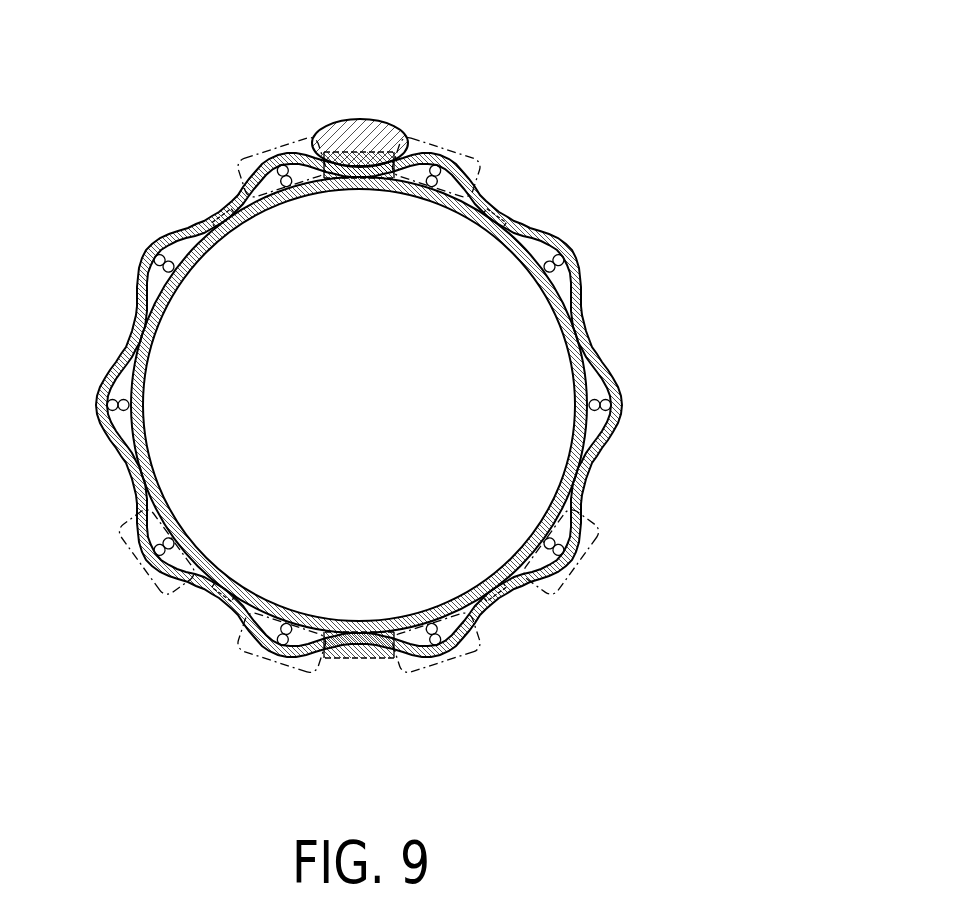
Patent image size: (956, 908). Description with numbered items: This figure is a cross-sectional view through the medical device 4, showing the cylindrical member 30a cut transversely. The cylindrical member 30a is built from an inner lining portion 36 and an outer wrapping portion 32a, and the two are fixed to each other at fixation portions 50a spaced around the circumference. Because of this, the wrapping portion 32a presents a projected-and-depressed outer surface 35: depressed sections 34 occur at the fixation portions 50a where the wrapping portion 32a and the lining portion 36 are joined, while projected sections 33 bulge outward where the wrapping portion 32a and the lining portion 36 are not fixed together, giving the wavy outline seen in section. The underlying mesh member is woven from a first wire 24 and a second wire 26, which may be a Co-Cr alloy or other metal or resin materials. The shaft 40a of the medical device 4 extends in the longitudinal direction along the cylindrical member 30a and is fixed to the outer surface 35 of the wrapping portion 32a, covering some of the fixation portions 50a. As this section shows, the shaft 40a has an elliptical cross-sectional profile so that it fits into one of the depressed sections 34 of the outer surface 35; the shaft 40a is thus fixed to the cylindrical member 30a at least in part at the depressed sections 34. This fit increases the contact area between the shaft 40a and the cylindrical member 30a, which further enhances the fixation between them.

The medical device 4 is at (164, 174).
The first wire 24 is at (262, 178).
The second wire 26 is at (275, 185).
The cylindrical member 30a is at (652, 271).
The wrapping portion 32a is at (627, 403).
The projected sections 33 is at (281, 140).
The depressed sections 34 is at (350, 191).
The projected-and-depressed outer surface 35 is at (590, 480).
The lining portion 36 is at (449, 212).
The shaft 40a is at (368, 121).
The fixation portions 50a is at (151, 338).